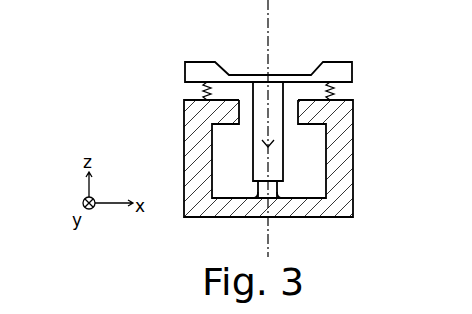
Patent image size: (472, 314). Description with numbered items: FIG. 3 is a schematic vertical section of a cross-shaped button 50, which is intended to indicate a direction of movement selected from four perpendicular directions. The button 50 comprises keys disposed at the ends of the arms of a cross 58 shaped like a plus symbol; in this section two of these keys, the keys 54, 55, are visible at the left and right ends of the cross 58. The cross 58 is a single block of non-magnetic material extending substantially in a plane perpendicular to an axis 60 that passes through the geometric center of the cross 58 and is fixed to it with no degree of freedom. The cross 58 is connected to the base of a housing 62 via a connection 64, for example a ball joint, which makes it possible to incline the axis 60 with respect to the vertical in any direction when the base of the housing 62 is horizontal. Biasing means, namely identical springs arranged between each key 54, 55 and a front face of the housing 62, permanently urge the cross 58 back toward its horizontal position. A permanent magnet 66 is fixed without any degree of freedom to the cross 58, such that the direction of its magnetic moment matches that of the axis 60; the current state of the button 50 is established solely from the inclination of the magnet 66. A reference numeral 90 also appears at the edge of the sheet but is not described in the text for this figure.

The cross-shaped button 50 is at (142, 127).
The key 54 is at (203, 63).
The key 55 is at (335, 63).
The cross 58 is at (338, 72).
The axis 60 is at (270, 0).
The housing 62 is at (342, 192).
The connection 64 is at (277, 188).
The permanent magnet 66 is at (277, 158).
The element 90 is at (411, 307).